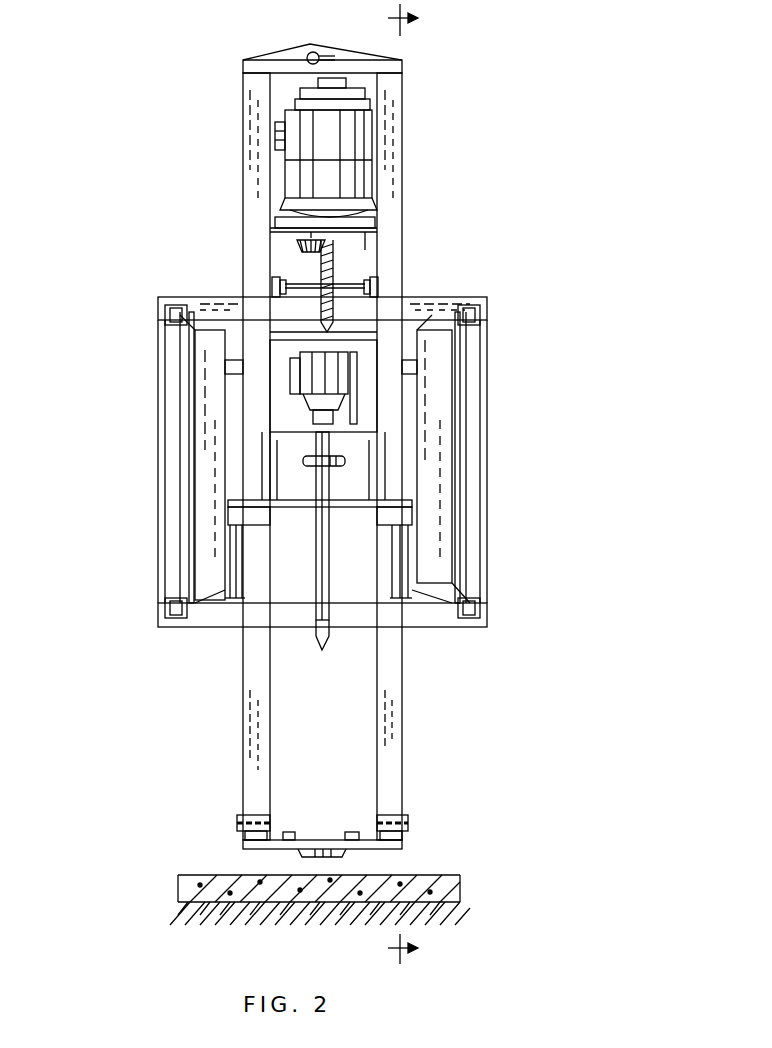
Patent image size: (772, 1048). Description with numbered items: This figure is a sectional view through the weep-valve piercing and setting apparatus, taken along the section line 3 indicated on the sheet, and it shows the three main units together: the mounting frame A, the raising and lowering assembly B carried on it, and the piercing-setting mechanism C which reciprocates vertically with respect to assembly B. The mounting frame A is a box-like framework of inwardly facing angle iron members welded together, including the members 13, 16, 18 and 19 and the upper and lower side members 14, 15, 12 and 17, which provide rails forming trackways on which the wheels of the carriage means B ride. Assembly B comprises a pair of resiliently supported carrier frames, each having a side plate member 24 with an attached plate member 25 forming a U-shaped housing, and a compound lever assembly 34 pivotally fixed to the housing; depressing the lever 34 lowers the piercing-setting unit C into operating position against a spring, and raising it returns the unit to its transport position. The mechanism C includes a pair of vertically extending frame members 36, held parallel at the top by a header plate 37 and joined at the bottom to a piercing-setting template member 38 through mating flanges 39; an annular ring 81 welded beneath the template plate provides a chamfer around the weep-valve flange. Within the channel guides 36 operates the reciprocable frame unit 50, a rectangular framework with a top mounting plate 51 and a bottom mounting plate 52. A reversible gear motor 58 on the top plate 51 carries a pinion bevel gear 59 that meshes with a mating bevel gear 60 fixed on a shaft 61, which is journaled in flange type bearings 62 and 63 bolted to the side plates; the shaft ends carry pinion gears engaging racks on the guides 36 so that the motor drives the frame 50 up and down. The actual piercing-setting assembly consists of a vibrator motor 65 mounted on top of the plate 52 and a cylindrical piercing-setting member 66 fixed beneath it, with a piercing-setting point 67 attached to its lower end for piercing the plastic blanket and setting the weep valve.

The section line 3- 3 is at (391, 484).
The lower side member 12 is at (160, 623).
The angle iron member 13 is at (158, 364).
The upper side member 14 is at (165, 314).
The upper side member 15 is at (487, 299).
The angle iron member 16 is at (487, 374).
The lower side member 17 is at (487, 626).
The angle iron member 18 is at (243, 299).
The angle iron member 19 is at (188, 630).
The side plate member 24 is at (189, 403).
The plate member 25 is at (205, 468).
The compound lever assembly 34 is at (230, 548).
The frame member 36 is at (243, 726).
The header plate 37 is at (280, 58).
The piercing-setting template member 38 is at (243, 845).
The mating flanges 39 is at (237, 823).
The reciprocable frame unit 50 is at (305, 566).
The top mounting plate 51 is at (357, 247).
The bottom mounting plate 52 is at (334, 473).
The reversible gear motor 58 is at (380, 132).
The pinion bevel gear 59 is at (300, 242).
The mating bevel gear 60 is at (325, 272).
The shaft 61 is at (318, 268).
The flange type bearing 62 is at (378, 288).
The flange type bearing 63 is at (272, 286).
The vibrator motor 65 is at (332, 380).
The piercing-setting member 66 is at (329, 575).
The piercing-setting point 67 is at (322, 650).
The annular ring 81 is at (344, 854).
The mounting frame A is at (487, 468).
The raising and lowering assembly B is at (189, 437).
The piercing-setting mechanism C is at (243, 768).